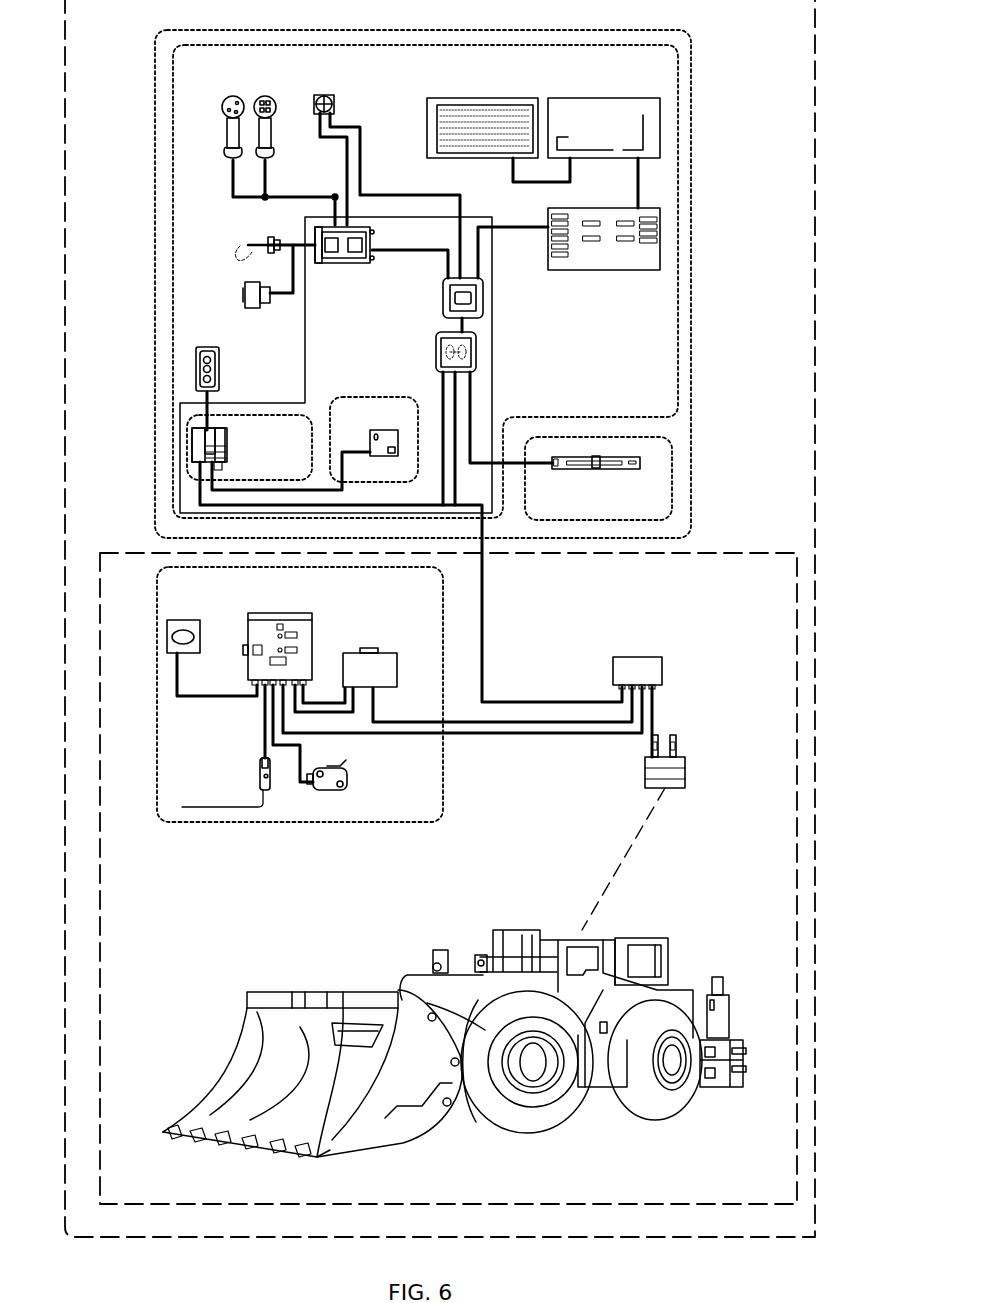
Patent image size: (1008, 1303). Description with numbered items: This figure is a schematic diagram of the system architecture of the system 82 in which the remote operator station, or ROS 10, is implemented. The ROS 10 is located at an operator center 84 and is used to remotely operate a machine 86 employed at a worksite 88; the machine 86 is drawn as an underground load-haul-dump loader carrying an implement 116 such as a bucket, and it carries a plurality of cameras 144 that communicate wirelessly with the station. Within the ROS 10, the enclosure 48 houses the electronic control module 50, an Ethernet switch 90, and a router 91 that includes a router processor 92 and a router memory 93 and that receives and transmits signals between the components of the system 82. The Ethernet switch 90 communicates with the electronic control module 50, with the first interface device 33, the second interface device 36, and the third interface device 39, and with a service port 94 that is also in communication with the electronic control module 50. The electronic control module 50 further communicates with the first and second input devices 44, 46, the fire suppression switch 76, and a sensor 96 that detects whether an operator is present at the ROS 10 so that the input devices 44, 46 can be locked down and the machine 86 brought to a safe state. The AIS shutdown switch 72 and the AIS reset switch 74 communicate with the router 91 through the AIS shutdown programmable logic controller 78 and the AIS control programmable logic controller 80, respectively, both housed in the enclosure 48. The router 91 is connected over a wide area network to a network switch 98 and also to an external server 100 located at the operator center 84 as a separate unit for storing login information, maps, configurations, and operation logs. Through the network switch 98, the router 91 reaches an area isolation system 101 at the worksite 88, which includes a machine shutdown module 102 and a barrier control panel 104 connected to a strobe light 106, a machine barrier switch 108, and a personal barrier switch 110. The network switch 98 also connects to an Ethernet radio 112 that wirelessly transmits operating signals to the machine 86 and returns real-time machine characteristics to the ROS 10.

The remote operator station (ROS) 10 is at (678, 127).
The first interface device 33 is at (605, 98).
The second interface device 36 is at (605, 270).
The third interface device 39 is at (483, 98).
The first input device 44 is at (264, 96).
The second input device 46 is at (234, 96).
The enclosure 48 is at (305, 372).
The electronic control module 50 is at (345, 265).
The AIS shutdown switch 72 is at (147, 368).
The AIS reset switch 74 is at (196, 372).
The fire suppression switch 76 is at (245, 292).
The AIS shutdown programmable logic controller 78 is at (227, 443).
The AIS control programmable logic controller 80 is at (384, 430).
The system 82 is at (815, 142).
The operator center 84 is at (691, 235).
The machine 86 is at (628, 960).
The worksite 88 is at (797, 752).
The Ethernet switch 90 is at (443, 292).
The router 91 is at (456, 338).
The router processor 92 is at (436, 348).
The router memory 93 is at (476, 350).
The service port 94 is at (326, 95).
The sensor 96 is at (262, 240).
The network switch 98 is at (662, 672).
The external server 100 is at (612, 469).
The area isolation system 101 is at (443, 790).
The machine shutdown module 102 is at (385, 653).
The barrier control panel 104 is at (280, 613).
The strobe light 106 is at (185, 620).
The machine barrier switch 108 is at (262, 788).
The personal barrier switch 110 is at (347, 782).
The Ethernet radio 112 is at (688, 772).
The implement 116 is at (358, 1118).
The plurality of cameras 144 is at (443, 950).